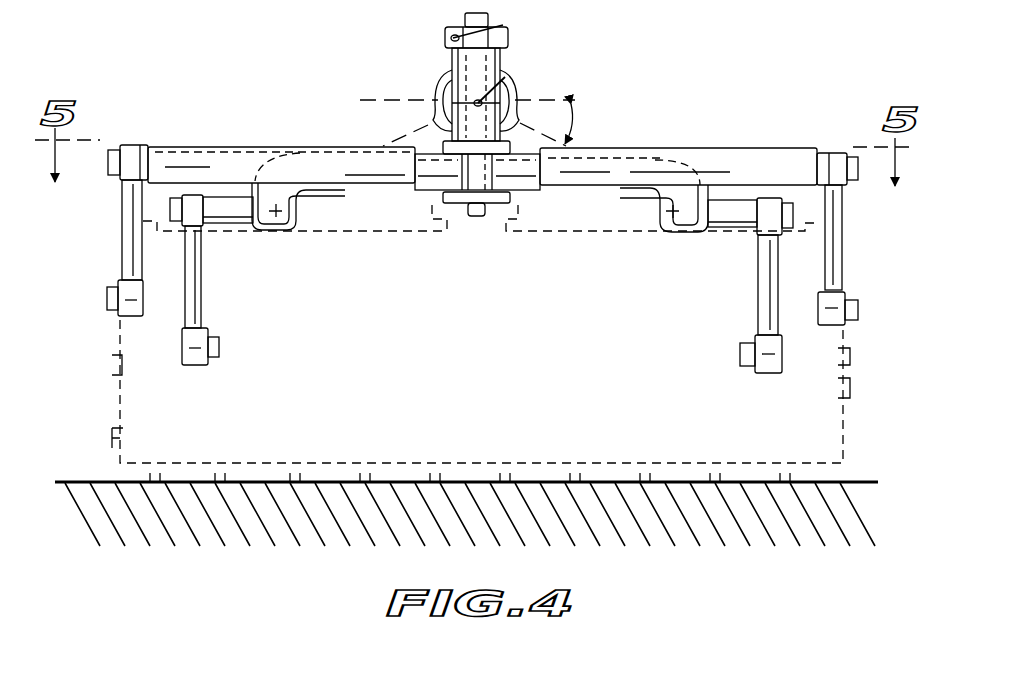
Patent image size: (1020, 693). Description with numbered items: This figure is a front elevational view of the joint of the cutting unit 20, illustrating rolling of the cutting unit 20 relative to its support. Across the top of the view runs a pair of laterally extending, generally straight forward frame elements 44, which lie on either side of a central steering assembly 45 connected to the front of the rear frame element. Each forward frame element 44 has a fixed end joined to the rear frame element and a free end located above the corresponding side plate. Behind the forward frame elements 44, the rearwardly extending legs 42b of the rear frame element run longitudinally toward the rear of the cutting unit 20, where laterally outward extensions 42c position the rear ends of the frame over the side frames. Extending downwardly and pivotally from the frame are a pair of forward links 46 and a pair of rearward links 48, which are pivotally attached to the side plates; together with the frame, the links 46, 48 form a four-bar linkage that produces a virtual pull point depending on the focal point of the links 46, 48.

The cutting unit 20 is at (812, 424).
The forward frame element 44 is at (248, 146).
The steering assembly 45 is at (528, 73).
The forward link 46 is at (125, 235).
The rearward link 48 is at (203, 302).
The rearwardly extending leg 42b is at (284, 211).
The laterally outward extension 42c is at (243, 230).